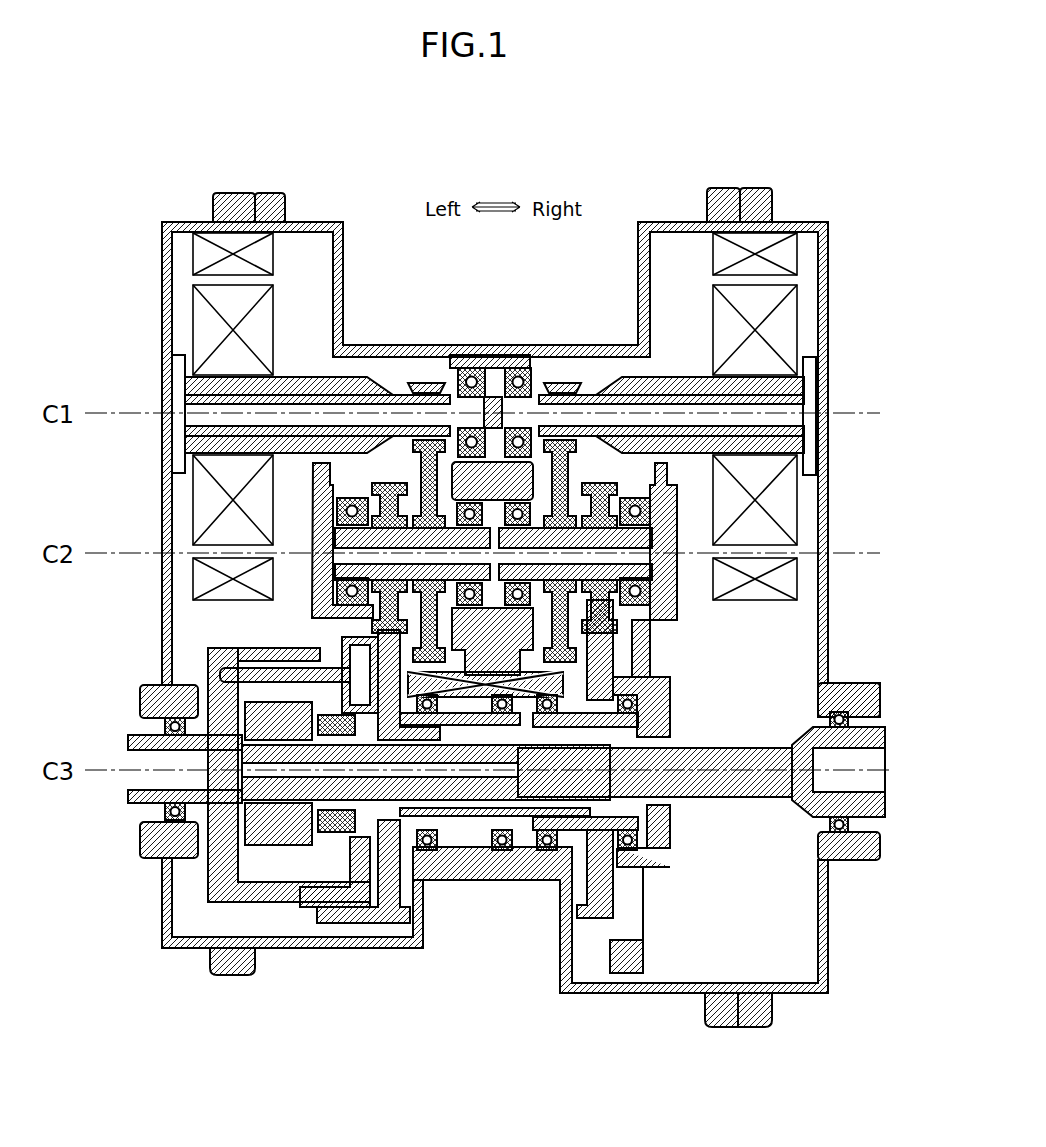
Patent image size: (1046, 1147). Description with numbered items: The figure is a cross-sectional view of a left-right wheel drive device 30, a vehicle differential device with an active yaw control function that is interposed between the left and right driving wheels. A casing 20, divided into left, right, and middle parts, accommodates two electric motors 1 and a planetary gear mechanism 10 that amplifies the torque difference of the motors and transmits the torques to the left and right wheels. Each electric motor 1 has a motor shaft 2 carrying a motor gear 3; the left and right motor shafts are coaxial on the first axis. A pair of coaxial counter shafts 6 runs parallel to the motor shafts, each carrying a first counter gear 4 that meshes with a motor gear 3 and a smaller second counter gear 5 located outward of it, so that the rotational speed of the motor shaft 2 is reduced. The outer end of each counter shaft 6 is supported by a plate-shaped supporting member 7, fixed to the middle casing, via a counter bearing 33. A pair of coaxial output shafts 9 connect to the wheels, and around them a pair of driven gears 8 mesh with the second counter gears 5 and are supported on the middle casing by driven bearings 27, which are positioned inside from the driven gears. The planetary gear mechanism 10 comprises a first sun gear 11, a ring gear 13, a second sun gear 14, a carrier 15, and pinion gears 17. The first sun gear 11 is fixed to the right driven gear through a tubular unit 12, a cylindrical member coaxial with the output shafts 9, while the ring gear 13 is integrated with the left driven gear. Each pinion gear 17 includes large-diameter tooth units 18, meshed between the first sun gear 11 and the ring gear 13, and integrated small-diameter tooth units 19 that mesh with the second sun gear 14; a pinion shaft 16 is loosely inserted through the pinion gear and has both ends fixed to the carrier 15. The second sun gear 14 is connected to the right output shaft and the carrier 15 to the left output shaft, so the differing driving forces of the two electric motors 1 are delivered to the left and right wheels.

The left-right wheel drive device 30 is at (128, 232).
The casing 20 is at (168, 222).
The electric motor 1 is at (700, 322).
The motor shaft 2 is at (606, 377).
The motor gear 3 is at (557, 382).
The first counter gear 4 is at (372, 467).
The second counter gear 5 is at (338, 452).
The counter bearing 33 is at (312, 500).
The counter shaft 6 is at (335, 506).
The supporting member 7 is at (336, 583).
The driven gear 8 is at (312, 617).
The pinion gear 17 is at (240, 672).
The driven bearing 27 is at (150, 690).
The output shaft 9 is at (138, 780).
The second sun gear 14 is at (205, 845).
The carrier 15 is at (200, 884).
The planetary gear mechanism 10 is at (212, 912).
The small-diameter tooth unit 19 is at (270, 846).
The large-diameter tooth unit 18 is at (322, 860).
The ring gear 13 is at (352, 907).
The first sun gear 11 is at (432, 830).
The pinion shaft 16 is at (400, 880).
The tubular unit 12 is at (490, 880).